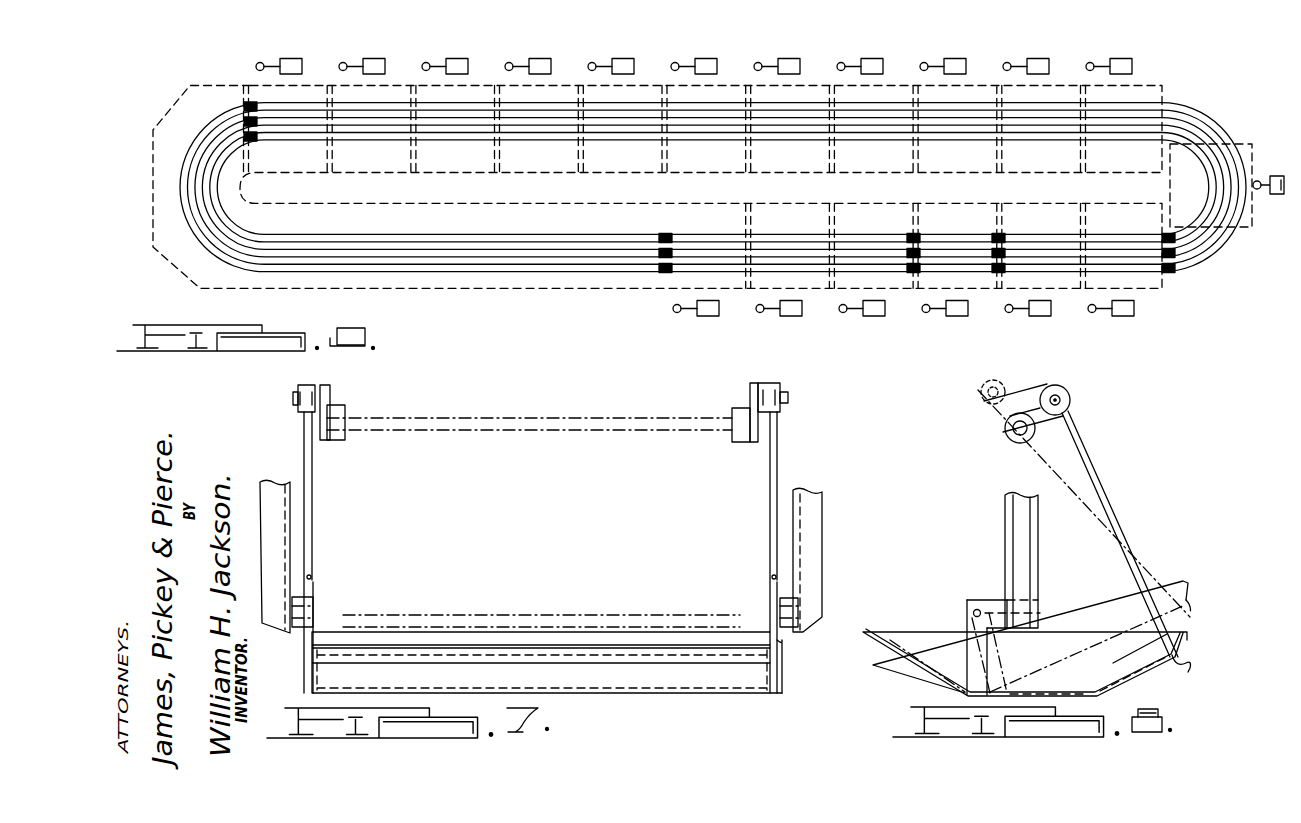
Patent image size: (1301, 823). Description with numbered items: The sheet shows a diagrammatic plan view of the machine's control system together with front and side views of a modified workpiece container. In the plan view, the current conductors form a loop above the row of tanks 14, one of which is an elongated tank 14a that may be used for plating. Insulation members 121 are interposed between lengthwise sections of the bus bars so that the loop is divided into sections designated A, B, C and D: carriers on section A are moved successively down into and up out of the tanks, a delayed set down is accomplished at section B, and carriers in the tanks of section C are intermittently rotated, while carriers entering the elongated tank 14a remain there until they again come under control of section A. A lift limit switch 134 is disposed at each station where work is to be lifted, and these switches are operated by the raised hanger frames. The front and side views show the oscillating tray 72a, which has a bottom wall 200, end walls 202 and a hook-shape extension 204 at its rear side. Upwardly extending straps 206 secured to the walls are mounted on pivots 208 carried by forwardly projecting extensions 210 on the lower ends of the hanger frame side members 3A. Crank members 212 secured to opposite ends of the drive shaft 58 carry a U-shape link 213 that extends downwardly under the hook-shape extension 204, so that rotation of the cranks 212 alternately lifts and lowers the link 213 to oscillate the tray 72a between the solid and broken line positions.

In FIG. 9, the tank 14 is at (1150, 85).
In FIG. 9, the elongated tank 14a is at (174, 267).
In FIG. 9, the insulation members 121 is at (250, 103).
In FIG. 9, the lift limit switch 134 is at (781, 58).
In FIG. 9, the feed rail section A is at (628, 136).
In FIG. 9, the feed rail section B is at (473, 136).
In FIG. 9, the feed rail section C is at (297, 136).
In FIG. 9, the feed rail section D is at (1063, 136).
In FIG. 7, the crank members 212 is at (330, 370).
In FIG. 8, the crank members 212 is at (1070, 417).
In FIG. 7, the output shaft 58 is at (363, 415).
In FIG. 8, the output shaft 58 is at (1007, 437).
In FIG. 7, the U-shape link 213 is at (777, 492).
In FIG. 8, the U-shape link 213 is at (1112, 503).
In FIG. 7, the guide rail 3A is at (263, 483).
In FIG. 8, the guide rail 3A is at (1027, 560).
In FIG. 7, the bottom wall 200 is at (650, 697).
In FIG. 8, the bottom wall 200 is at (1120, 690).
In FIG. 7, the oscillating tray 72a is at (792, 691).
In FIG. 8, the end walls 202 is at (890, 637).
In FIG. 8, the hook-shape extension 204 is at (1190, 672).
In FIG. 8, the straps 206 is at (962, 627).
In FIG. 8, the pivots 208 is at (967, 602).
In FIG. 8, the forwardly projecting extensions 210 is at (993, 600).